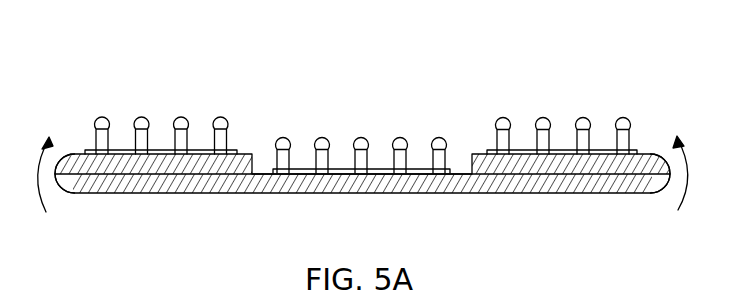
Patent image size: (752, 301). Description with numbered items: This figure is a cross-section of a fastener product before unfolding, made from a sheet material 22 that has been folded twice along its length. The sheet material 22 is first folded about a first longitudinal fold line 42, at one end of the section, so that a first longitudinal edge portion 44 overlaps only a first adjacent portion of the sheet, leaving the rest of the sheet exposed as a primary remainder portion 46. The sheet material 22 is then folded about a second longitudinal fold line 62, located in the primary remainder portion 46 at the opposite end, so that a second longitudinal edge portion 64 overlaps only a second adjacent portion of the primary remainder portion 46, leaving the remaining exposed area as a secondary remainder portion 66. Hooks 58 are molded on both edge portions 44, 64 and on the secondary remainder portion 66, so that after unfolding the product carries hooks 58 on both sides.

The sheet material 22 is at (507, 193).
The first longitudinal fold line 42 is at (657, 193).
The second longitudinal fold line 62 is at (73, 193).
The first longitudinal edge portion 44 is at (556, 96).
The primary remainder portion 46 is at (270, 90).
The second longitudinal edge portion 64 is at (83, 103).
The secondary remainder portion 66 is at (361, 117).
The hooks 58 is at (522, 122).